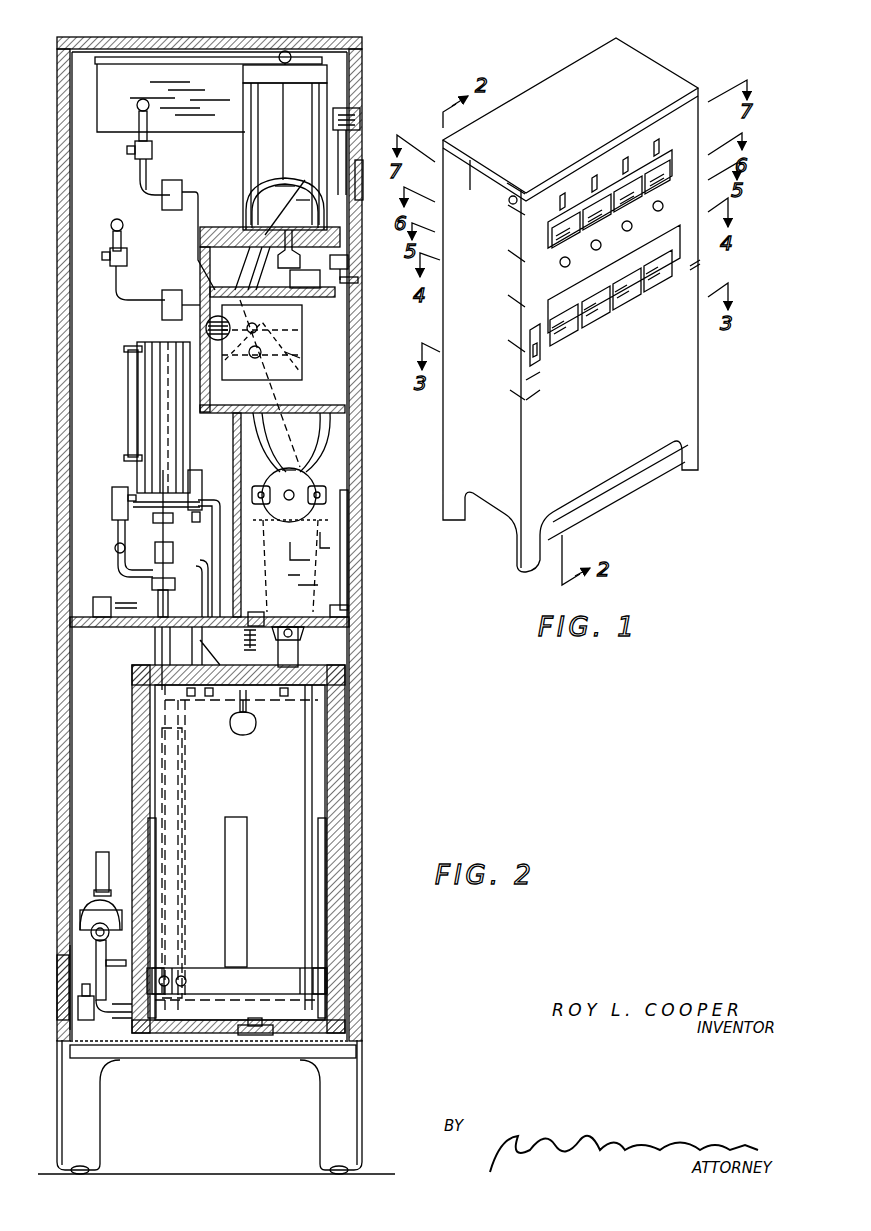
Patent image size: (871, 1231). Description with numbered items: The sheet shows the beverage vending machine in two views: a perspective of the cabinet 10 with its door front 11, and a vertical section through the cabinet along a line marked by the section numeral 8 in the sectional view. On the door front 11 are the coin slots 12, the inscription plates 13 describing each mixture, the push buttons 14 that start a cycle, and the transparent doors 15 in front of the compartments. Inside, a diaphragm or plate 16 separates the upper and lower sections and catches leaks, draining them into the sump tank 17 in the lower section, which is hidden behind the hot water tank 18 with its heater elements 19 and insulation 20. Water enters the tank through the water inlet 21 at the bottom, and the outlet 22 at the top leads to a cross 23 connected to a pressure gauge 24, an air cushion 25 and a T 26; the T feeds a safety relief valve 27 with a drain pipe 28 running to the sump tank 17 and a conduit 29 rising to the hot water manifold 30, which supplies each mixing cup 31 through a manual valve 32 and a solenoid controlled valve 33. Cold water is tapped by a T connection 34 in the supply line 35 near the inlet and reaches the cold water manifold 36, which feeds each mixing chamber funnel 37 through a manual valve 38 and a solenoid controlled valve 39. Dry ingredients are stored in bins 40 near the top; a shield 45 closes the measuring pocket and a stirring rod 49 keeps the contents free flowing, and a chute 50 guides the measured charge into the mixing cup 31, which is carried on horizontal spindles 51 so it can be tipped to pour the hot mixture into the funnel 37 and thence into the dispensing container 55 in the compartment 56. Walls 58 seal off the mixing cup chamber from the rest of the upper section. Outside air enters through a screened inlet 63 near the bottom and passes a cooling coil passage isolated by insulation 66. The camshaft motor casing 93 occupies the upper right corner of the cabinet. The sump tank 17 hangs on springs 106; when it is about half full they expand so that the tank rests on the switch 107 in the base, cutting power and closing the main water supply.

In FIG. 2, the section line 8-8 / spring 8 is at (333, 62).
In FIG. 1, the cabinet 10 is at (494, 492).
In FIG. 1, the door front 11 is at (620, 450).
In FIG. 2, the coin slots 12 is at (362, 112).
In FIG. 1, the coin slots 12 is at (660, 140).
In FIG. 2, the inscription plates 13 is at (364, 200).
In FIG. 1, the inscription plates 13 is at (670, 160).
In FIG. 2, the push buttons 14 is at (358, 280).
In FIG. 1, the push buttons 14 is at (663, 208).
In FIG. 2, the doors 15 is at (352, 560).
In FIG. 1, the doors 15 is at (672, 252).
In FIG. 2, the diaphragm or plate 16 is at (133, 628).
In FIG. 2, the sump tank 17 is at (347, 768).
In FIG. 2, the hot water tank 18 is at (307, 912).
In FIG. 2, the heater elements 19 is at (148, 866).
In FIG. 2, the insulation 20 is at (183, 720).
In FIG. 2, the water inlet 21 is at (128, 1010).
In FIG. 2, the outlet 22 is at (158, 648).
In FIG. 2, the cross 23 is at (152, 586).
In FIG. 2, the pressure gauge 24 is at (196, 470).
In FIG. 2, the air cushion 25 is at (147, 348).
In FIG. 2, the T 26 is at (116, 540).
In FIG. 2, the safety relief valve 27 is at (112, 494).
In FIG. 2, the drain pipe 28 is at (216, 500).
In FIG. 2, the conduit 29 is at (115, 551).
In FIG. 2, the manifold 30 is at (138, 108).
In FIG. 2, the mixing cup 31 is at (275, 330).
In FIG. 2, the manual valve 32 is at (152, 150).
In FIG. 2, the solenoid controlled valve 33 is at (178, 182).
In FIG. 2, the T connection 34 is at (96, 966).
In FIG. 2, the supply line 35 is at (80, 948).
In FIG. 2, the manifold 36 is at (116, 220).
In FIG. 2, the mixing chamber funnels 37 is at (300, 466).
In FIG. 2, the manual valve 38 is at (127, 256).
In FIG. 2, the solenoid controlled valve 39 is at (172, 290).
In FIG. 2, the bins 40 is at (258, 114).
In FIG. 2, the shield 45 is at (296, 206).
In FIG. 2, the stirring rod 49 is at (283, 192).
In FIG. 2, the chute 50 is at (252, 265).
In FIG. 2, the horizontal spindles 51 is at (292, 368).
In FIG. 2, the dispensing container 55 is at (300, 580).
In FIG. 2, the compartment 56 is at (335, 520).
In FIG. 2, the walls 58 is at (205, 326).
In FIG. 2, the screened inlet 63 is at (60, 1008).
In FIG. 2, the insulation 66 is at (185, 420).
In FIG. 2, the camshaft motor casing 93 is at (113, 122).
In FIG. 2, the springs 106 is at (292, 642).
In FIG. 2, the switch 107 is at (260, 1048).